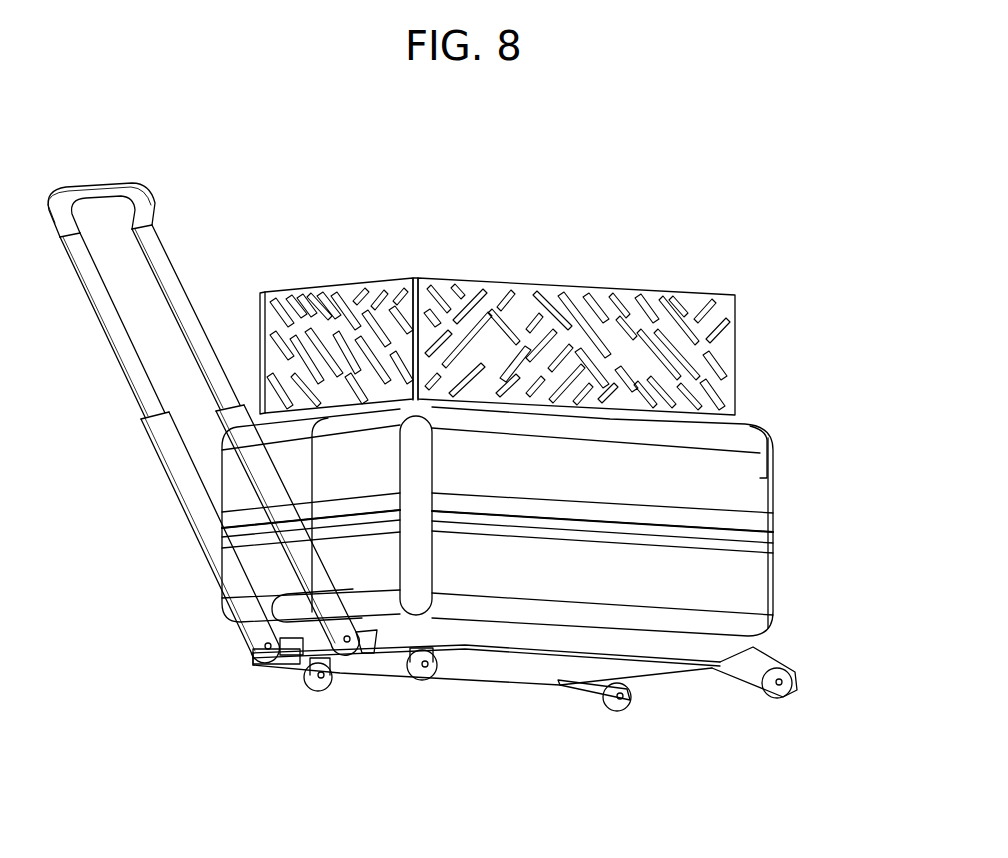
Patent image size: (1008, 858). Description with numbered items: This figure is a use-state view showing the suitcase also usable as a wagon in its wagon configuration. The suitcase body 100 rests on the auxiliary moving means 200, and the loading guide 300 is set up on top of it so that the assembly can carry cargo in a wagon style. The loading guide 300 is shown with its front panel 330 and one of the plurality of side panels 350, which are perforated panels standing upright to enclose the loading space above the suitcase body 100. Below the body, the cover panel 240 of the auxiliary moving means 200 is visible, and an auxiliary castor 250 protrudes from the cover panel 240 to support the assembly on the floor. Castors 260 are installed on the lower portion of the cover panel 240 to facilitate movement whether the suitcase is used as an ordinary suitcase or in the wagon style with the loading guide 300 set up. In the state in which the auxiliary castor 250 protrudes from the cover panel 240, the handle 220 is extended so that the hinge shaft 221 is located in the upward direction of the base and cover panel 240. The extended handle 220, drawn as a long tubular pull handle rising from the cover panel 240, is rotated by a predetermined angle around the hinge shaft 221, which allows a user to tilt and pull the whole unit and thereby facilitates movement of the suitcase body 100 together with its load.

The suitcase body 100 is at (551, 521).
The auxiliary moving means 200 is at (572, 747).
The handle 220 is at (205, 377).
The hinge shaft 221 is at (259, 667).
The cover panel 240 is at (486, 707).
The auxiliary castor 250 is at (280, 721).
The castor 260 is at (762, 663).
The loading guide 300 is at (497, 304).
The front panel 330 is at (320, 293).
The side panel 350 is at (609, 294).